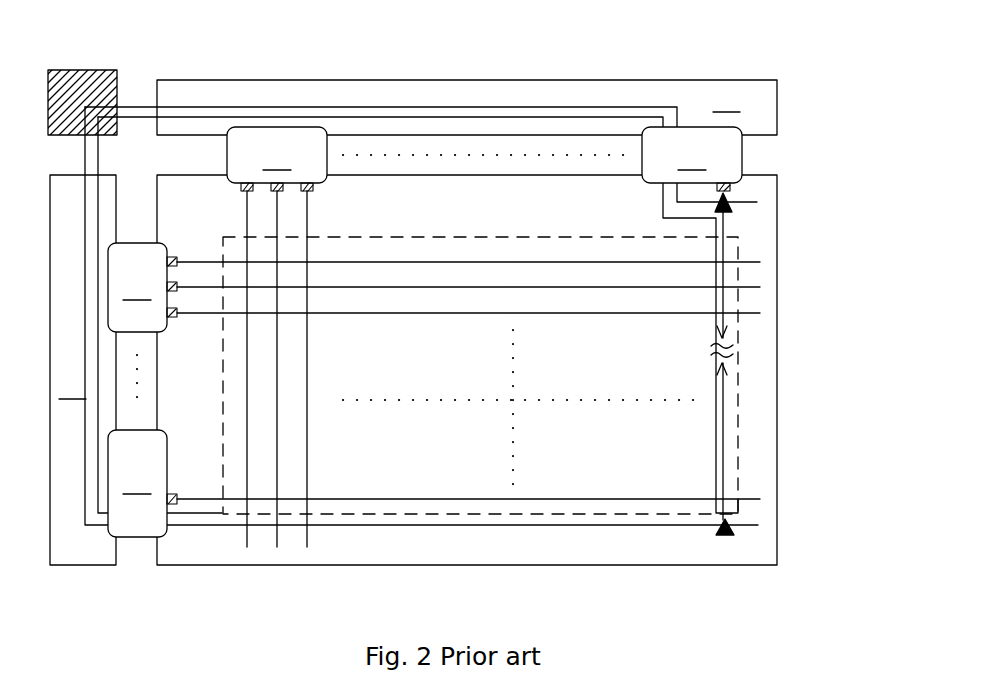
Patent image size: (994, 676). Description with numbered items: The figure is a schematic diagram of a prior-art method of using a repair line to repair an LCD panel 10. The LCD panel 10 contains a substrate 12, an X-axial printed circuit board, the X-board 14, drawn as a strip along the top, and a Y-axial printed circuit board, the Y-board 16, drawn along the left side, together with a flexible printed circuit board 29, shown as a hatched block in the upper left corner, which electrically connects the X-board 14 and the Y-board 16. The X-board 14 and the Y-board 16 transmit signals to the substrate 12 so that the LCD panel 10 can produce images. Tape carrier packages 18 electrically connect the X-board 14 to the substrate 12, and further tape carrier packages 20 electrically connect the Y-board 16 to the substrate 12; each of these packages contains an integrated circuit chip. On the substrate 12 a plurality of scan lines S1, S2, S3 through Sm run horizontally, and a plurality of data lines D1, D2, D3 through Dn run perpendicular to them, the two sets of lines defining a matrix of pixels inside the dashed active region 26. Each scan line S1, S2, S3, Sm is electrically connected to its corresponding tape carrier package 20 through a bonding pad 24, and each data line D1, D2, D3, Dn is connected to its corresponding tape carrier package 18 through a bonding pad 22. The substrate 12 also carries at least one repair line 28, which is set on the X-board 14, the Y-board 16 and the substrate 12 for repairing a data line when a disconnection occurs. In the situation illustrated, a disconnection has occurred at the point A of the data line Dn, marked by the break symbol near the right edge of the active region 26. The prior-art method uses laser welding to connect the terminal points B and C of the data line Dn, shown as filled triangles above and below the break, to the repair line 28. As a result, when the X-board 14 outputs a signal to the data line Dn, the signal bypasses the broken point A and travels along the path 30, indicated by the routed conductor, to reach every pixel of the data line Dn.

The LCD panel 10 is at (716, 44).
The substrate 12 is at (780, 537).
The X-axial printed circuit board 14 is at (467, 107).
The Y-axial printed circuit board 16 is at (83, 370).
The tape carrier package 18 is at (484, 155).
The tape carrier package 20 is at (137, 390).
The bonding pad 22 is at (243, 188).
The bonding pad 24 is at (170, 257).
The active region 26 is at (740, 401).
The repair line 28 is at (580, 527).
The flexible printed circuit board 29 is at (89, 78).
The path 30 is at (549, 118).
The scan line S1 is at (760, 262).
The scan line S2 is at (760, 287).
The scan line S3 is at (760, 313).
The scan line Sm is at (760, 499).
The data line D1 is at (247, 547).
The data line D2 is at (277, 547).
The data line D3 is at (307, 547).
The data line Dn is at (725, 537).
The point A is at (713, 354).
The terminal point B is at (737, 208).
The terminal point C is at (733, 540).